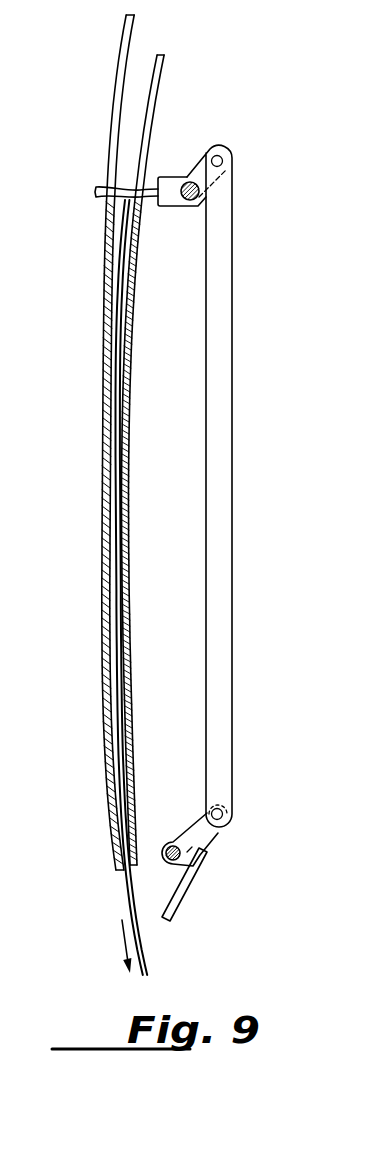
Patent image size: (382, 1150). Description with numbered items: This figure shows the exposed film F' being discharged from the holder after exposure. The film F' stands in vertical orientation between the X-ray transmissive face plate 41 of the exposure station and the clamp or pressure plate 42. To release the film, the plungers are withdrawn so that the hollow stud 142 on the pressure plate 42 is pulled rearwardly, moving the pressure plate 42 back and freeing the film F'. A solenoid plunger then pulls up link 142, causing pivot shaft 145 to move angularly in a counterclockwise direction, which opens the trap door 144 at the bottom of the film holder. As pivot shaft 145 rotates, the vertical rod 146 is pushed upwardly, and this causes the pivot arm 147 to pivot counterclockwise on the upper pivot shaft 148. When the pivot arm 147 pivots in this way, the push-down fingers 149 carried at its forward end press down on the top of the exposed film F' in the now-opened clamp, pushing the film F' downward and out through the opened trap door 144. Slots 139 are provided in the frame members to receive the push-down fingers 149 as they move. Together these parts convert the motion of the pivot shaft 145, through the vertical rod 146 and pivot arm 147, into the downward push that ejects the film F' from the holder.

The slots 139 is at (137, 106).
The face plate 41 is at (103, 423).
The pressure plate 42 is at (130, 424).
The film F' is at (148, 587).
The push-down fingers 149 is at (102, 187).
The vertical rod 146 is at (221, 358).
The pivot arm 147 is at (168, 185).
The upper pivot shaft 148 is at (190, 204).
The hollow stud 142 is at (210, 826).
The pivot shaft 145 is at (173, 845).
The trap door 144 is at (177, 900).